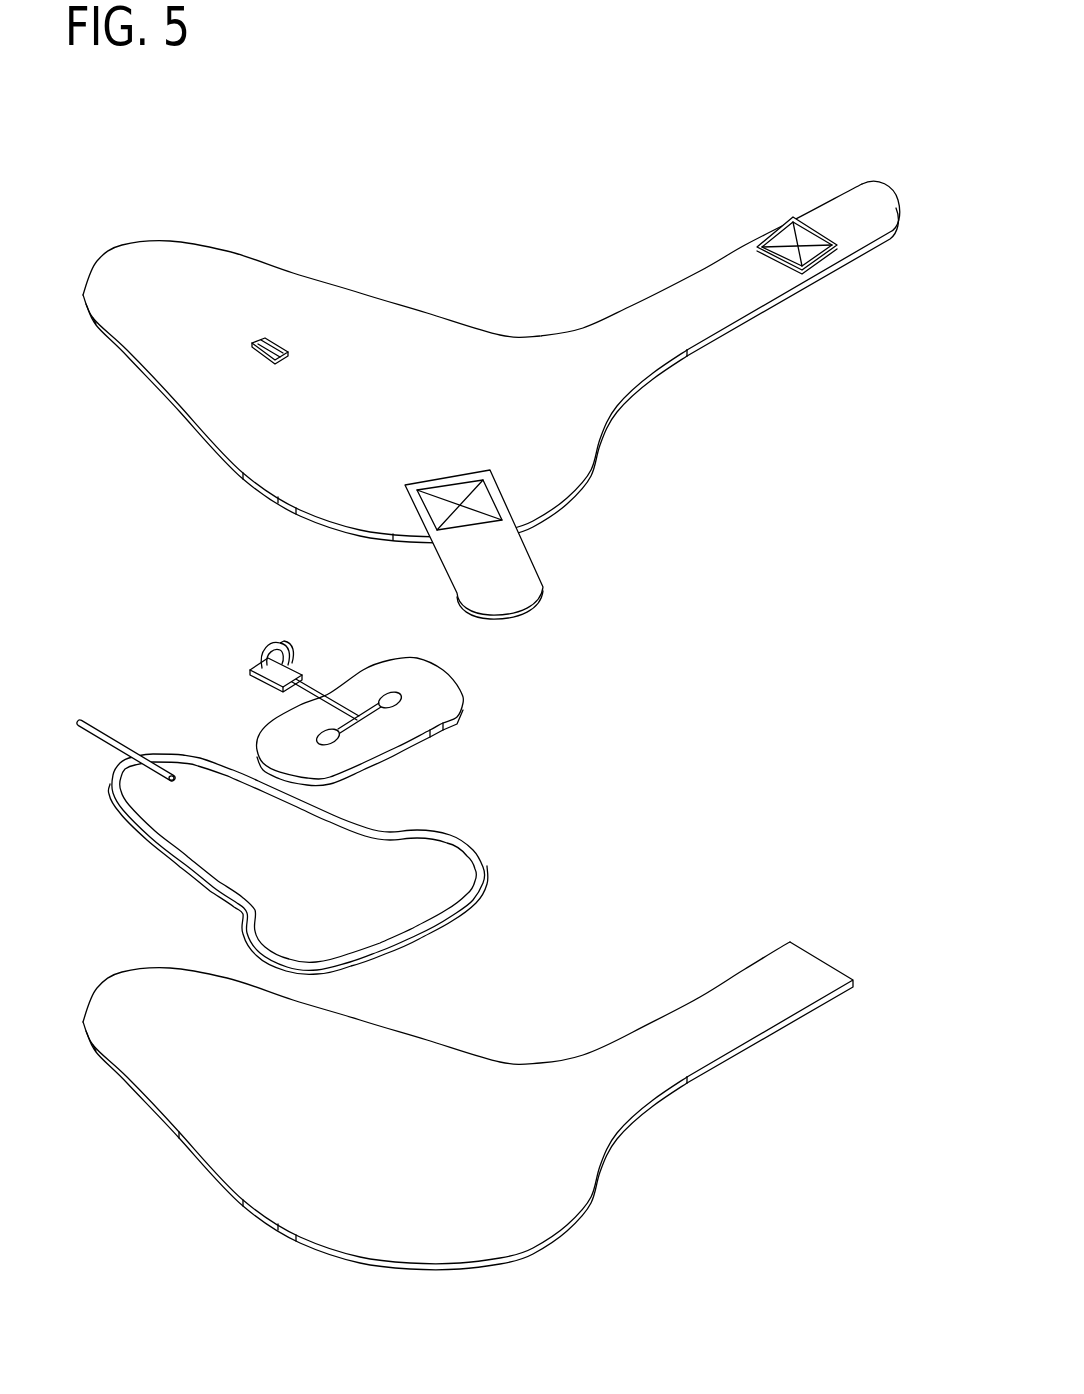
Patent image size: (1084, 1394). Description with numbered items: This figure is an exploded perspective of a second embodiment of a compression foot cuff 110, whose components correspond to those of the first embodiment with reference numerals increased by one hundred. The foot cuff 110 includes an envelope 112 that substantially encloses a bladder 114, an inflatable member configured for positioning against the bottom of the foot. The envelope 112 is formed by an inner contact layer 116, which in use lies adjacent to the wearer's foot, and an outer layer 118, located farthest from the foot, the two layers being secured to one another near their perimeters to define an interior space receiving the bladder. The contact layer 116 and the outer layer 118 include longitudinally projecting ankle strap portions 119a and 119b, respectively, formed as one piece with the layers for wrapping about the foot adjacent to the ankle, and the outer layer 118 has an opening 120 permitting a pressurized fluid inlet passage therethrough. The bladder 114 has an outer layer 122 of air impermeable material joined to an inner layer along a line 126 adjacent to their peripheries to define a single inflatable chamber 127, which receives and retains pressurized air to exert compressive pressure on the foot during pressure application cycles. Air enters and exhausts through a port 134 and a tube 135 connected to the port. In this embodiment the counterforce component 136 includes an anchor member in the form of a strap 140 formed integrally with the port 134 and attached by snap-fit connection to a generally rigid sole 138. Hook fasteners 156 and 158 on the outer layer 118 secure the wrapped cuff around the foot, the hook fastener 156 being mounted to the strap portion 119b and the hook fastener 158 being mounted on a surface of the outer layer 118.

The compression foot cuff 110 is at (476, 635).
The envelope 112 is at (491, 373).
The bladder 114 is at (335, 745).
The contact layer 116 is at (468, 1065).
The outer layer 118 is at (183, 413).
The ankle strap portion 119a is at (775, 977).
The ankle strap portion 119b is at (687, 296).
The opening 120 is at (278, 348).
The outer layer of bladder 122 is at (290, 835).
The line 126 is at (142, 811).
The inflatable chamber 127 is at (440, 864).
The port 134 is at (268, 644).
The tube 135 is at (90, 728).
The counterforce component 136 is at (438, 691).
The sole 138 is at (450, 718).
The anchor member 140 is at (322, 691).
The hook fastener 156 is at (525, 588).
The hook fastener 158 is at (836, 210).